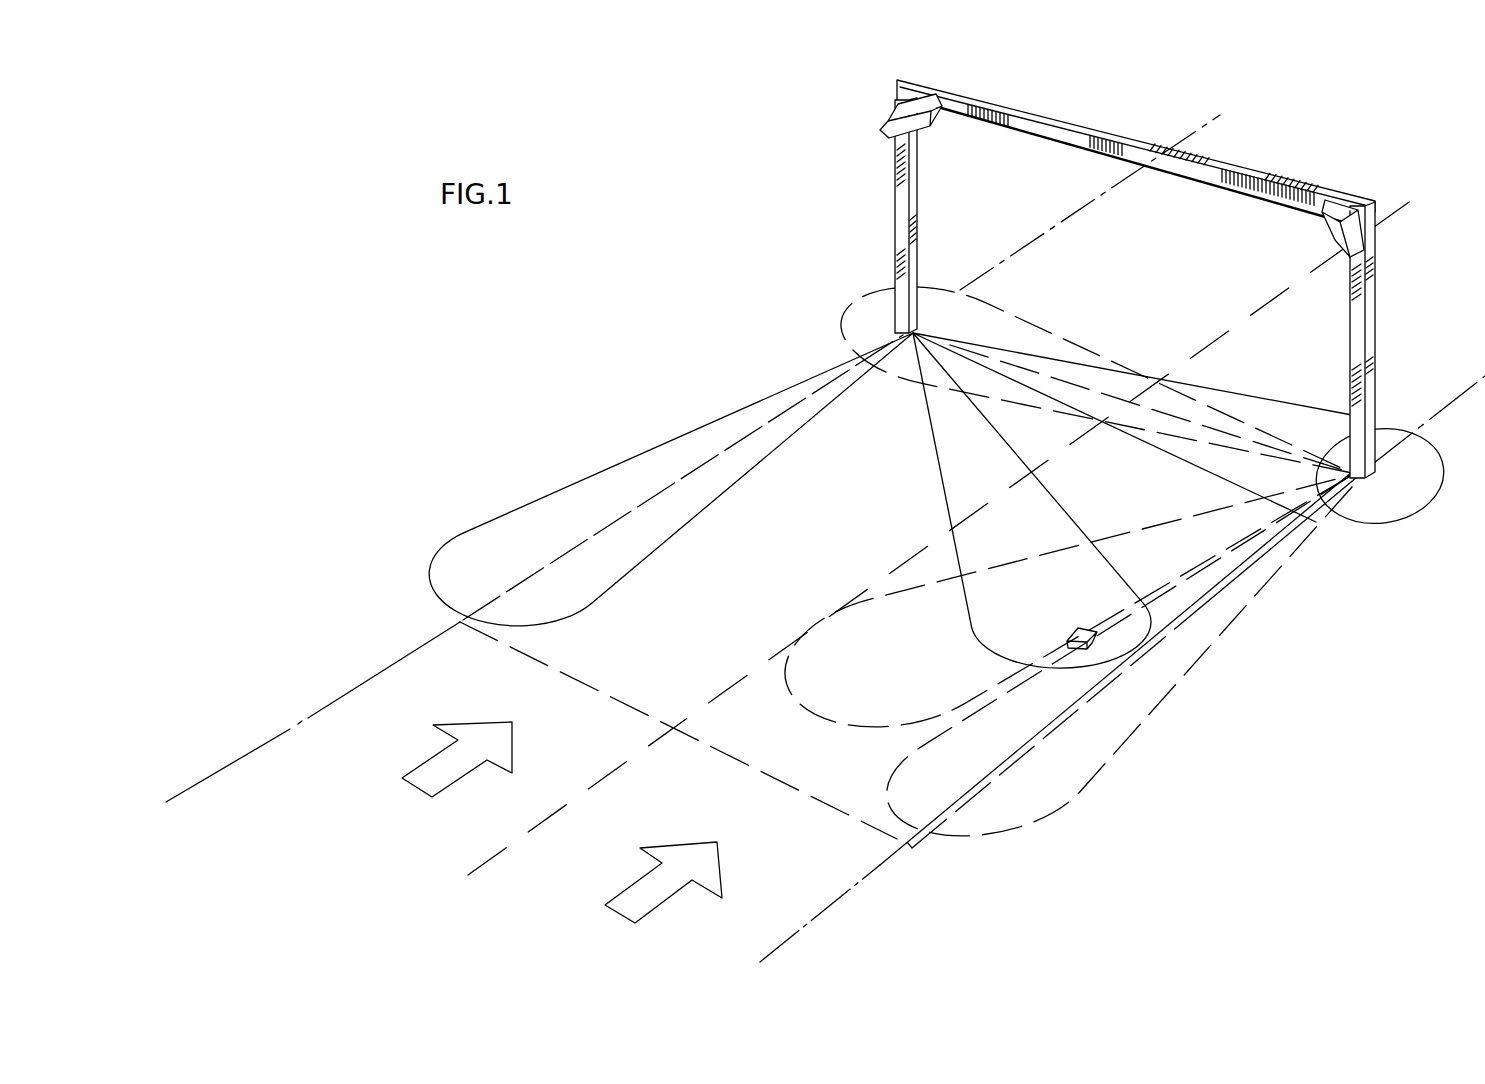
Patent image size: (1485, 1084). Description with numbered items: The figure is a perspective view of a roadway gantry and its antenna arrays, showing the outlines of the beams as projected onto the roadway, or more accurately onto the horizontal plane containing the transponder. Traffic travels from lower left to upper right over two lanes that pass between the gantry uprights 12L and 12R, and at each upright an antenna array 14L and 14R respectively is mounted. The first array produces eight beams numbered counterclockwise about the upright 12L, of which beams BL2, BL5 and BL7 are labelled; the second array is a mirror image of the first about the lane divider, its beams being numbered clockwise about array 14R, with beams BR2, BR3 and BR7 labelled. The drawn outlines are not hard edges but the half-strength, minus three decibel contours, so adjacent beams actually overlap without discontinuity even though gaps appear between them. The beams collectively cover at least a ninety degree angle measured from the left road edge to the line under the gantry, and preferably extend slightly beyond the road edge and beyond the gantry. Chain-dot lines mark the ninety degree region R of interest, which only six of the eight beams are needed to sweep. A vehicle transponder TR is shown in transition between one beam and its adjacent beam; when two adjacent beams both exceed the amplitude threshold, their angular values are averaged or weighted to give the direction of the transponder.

The gantry upright 12L is at (895, 208).
The gantry upright 12R is at (1373, 335).
The antenna array 14L is at (884, 117).
The antenna array 14R is at (1350, 220).
The beam BL2 is at (473, 552).
The beam BL5 is at (934, 467).
The beam BL7 is at (1408, 520).
The beam BR2 is at (1120, 758).
The beam BR3 is at (805, 700).
The beam BR7 is at (848, 330).
The transponder TR is at (1076, 631).
The region R is at (630, 506).